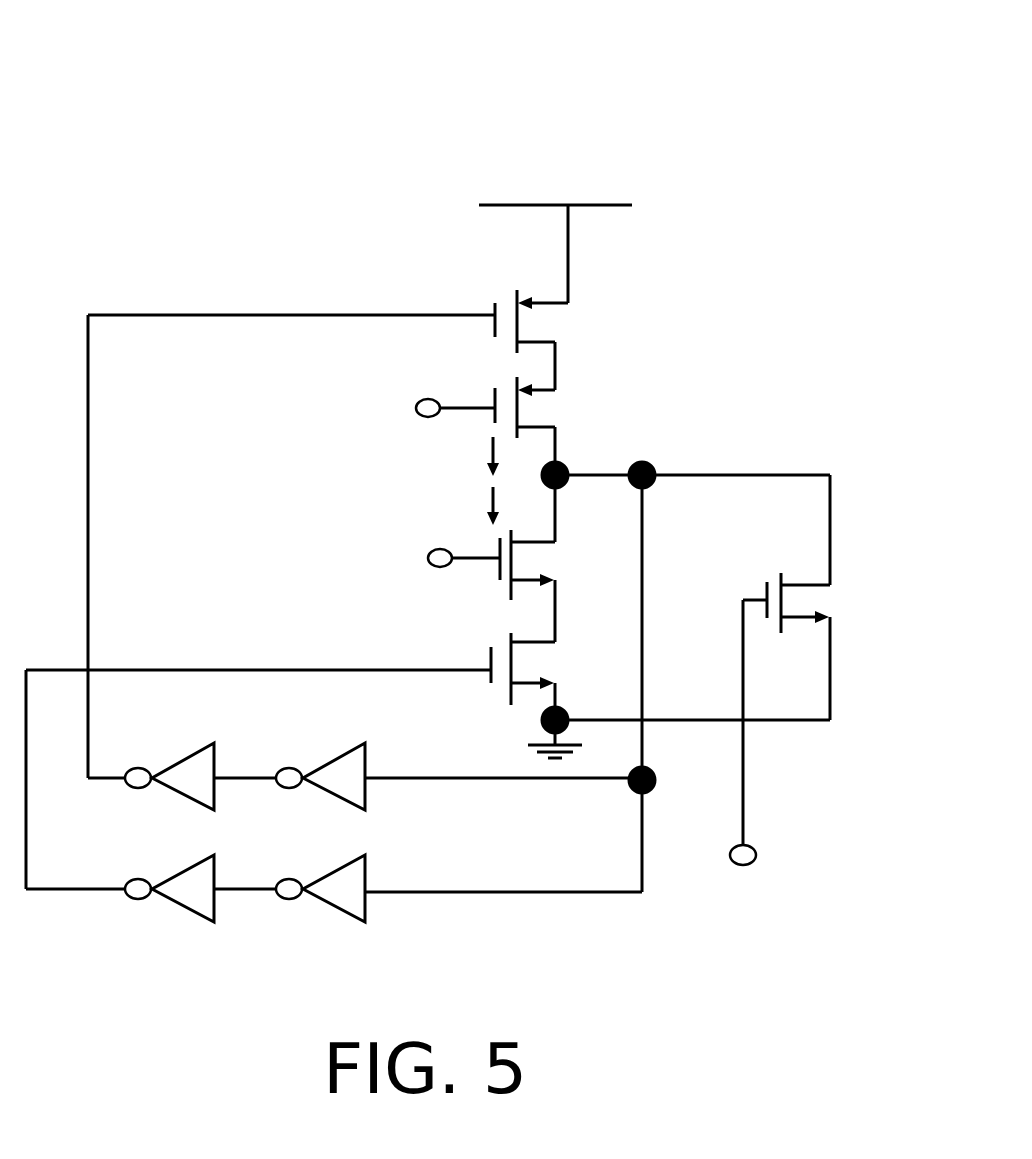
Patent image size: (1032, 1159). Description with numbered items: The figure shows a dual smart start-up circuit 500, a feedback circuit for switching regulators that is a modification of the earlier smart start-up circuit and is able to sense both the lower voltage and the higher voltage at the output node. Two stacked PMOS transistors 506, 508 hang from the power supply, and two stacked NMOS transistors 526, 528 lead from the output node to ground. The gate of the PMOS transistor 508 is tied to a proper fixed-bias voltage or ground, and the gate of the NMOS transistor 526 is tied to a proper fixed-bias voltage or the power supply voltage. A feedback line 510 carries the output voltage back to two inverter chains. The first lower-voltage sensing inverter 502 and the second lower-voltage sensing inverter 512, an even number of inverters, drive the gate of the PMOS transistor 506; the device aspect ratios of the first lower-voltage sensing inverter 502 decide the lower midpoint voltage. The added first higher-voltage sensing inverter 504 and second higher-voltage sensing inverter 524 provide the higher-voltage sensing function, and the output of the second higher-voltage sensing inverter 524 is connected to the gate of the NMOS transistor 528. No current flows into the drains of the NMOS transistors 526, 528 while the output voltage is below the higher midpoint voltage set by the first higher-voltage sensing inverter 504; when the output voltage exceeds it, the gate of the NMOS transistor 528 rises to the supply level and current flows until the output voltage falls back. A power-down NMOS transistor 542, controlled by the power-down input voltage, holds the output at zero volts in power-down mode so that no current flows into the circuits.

The dual smart start-up circuit 500 is at (482, 78).
The PMOS transistor 506 is at (570, 313).
The PMOS transistor 508 is at (553, 394).
The NMOS transistor 526 is at (552, 553).
The NMOS transistor 528 is at (552, 649).
The power-down NMOS transistor 542 is at (873, 583).
The second lower-voltage sensing inverter 512 is at (190, 803).
The first lower-voltage sensing inverter 502 is at (327, 803).
The second higher-voltage sensing inverter 524 is at (169, 902).
The first higher-voltage sensing inverter 504 is at (327, 912).
The feedback line 510 is at (538, 903).